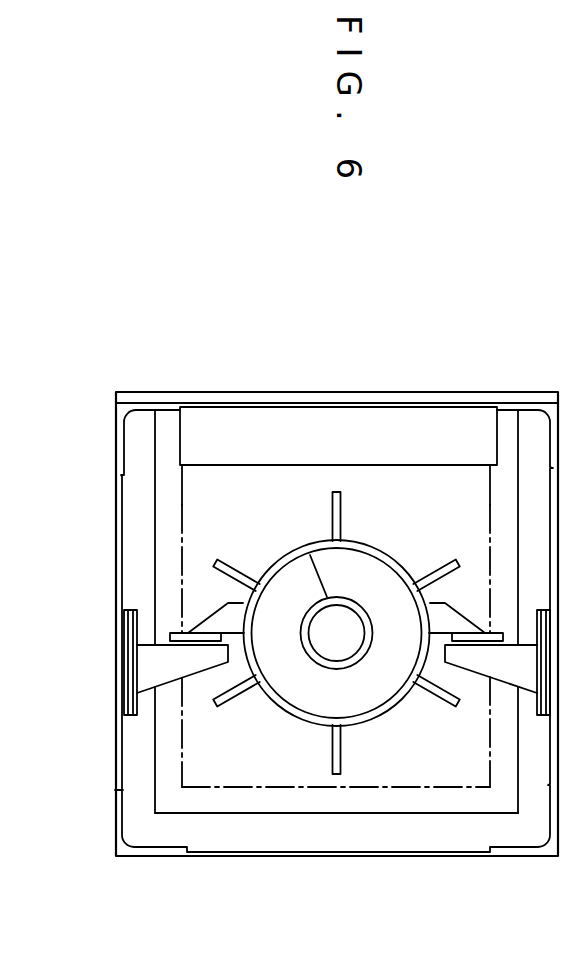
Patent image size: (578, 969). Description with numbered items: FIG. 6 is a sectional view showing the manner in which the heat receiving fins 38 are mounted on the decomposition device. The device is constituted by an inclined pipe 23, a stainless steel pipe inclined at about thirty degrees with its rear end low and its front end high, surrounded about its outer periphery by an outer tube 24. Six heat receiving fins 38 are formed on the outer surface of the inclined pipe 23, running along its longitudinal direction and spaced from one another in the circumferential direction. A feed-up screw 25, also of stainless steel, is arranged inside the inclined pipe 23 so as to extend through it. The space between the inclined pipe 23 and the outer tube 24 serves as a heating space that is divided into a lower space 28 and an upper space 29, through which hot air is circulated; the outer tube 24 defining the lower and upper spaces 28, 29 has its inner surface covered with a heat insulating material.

The inclined pipe 23 is at (402, 562).
The outer tube 24 is at (117, 517).
The feed-up screw 25 is at (292, 583).
The lower space 28 is at (350, 546).
The upper space 29 is at (415, 483).
The heat receiving fins 38 is at (221, 706).